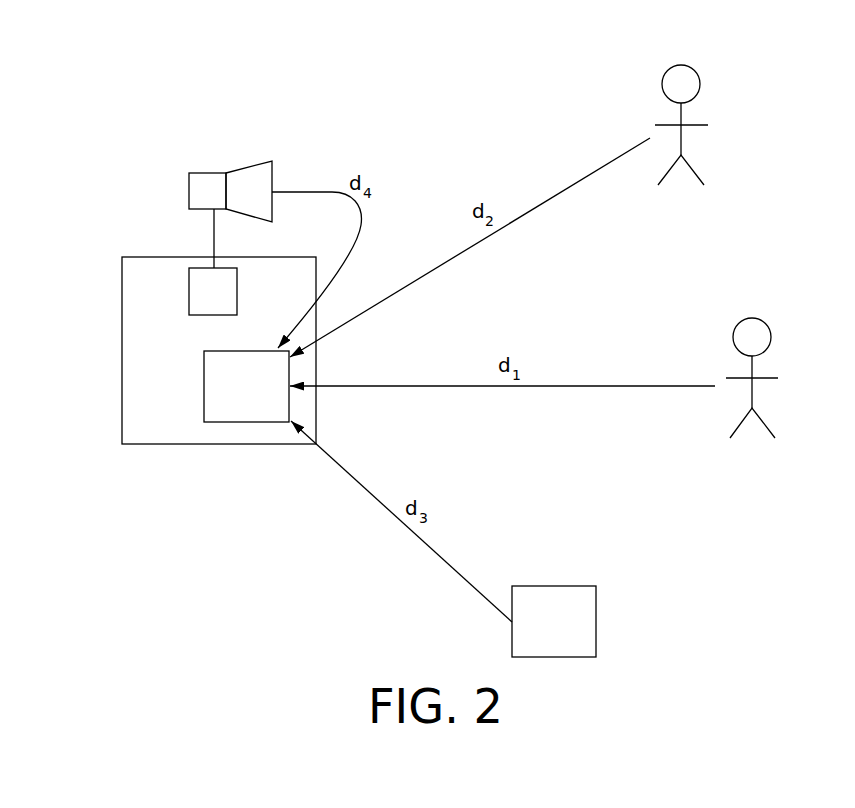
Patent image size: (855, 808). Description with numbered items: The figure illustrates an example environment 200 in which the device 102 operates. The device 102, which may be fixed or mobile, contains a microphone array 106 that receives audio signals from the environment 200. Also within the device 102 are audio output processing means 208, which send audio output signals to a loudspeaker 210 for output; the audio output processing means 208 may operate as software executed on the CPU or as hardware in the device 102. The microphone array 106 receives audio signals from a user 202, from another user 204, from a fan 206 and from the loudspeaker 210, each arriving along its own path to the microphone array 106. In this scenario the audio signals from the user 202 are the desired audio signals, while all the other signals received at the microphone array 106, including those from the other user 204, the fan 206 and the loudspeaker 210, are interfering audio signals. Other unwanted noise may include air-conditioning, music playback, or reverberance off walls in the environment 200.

The environment 200 is at (116, 144).
The device 102 is at (122, 352).
The microphone array 106 is at (230, 422).
The audio output processing means 208 is at (189, 285).
The loudspeaker 210 is at (212, 173).
The user 202 is at (752, 318).
The another user 204 is at (681, 65).
The fan 206 is at (596, 620).